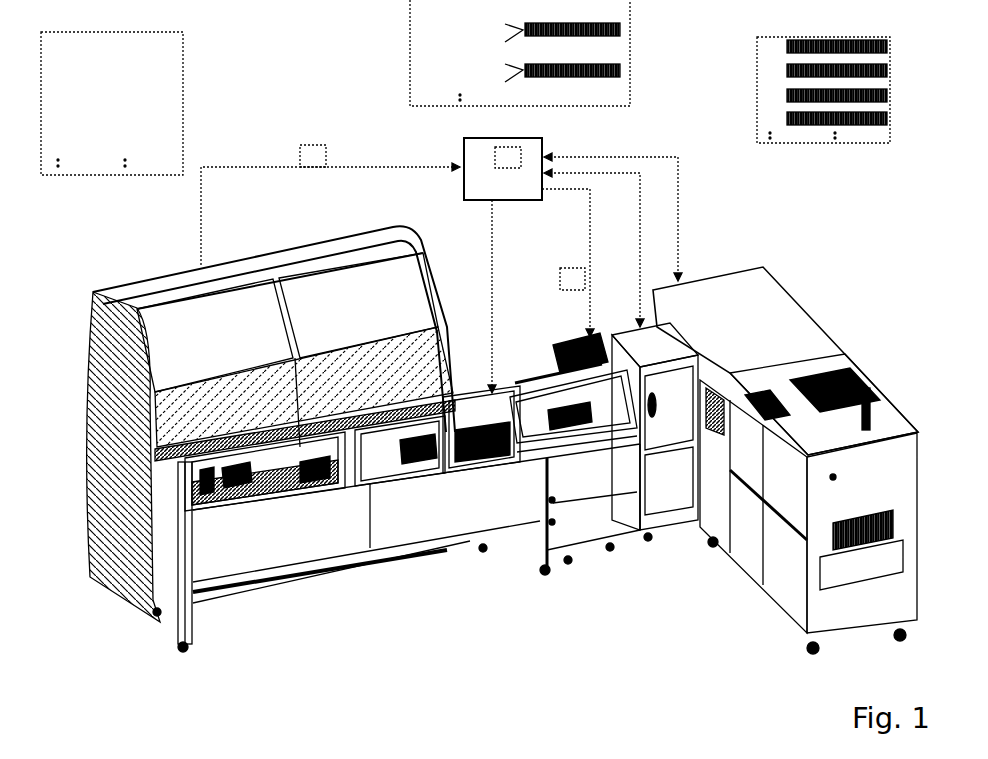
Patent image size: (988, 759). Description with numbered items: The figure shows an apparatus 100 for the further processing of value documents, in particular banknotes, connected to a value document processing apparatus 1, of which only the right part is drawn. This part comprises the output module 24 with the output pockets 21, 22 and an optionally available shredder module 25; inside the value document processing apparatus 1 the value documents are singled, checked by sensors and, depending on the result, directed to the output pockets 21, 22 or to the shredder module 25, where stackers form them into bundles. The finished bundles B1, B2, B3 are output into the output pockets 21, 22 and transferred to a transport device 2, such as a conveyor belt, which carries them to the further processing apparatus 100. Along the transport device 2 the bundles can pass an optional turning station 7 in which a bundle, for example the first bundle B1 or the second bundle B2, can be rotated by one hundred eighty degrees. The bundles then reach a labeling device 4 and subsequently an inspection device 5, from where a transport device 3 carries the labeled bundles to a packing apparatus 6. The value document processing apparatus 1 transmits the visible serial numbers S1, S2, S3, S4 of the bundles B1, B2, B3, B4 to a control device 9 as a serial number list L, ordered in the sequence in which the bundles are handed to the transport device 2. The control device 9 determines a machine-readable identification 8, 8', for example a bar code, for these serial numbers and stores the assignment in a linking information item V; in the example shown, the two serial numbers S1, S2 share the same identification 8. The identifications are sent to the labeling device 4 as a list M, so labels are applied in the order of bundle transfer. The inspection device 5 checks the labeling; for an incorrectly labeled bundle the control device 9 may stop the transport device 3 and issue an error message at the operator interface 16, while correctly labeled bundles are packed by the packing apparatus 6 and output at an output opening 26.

The value document processing apparatus 1 is at (98, 299).
The transport device 2 is at (400, 451).
The transport device 3 is at (604, 418).
The labeling device 4 is at (580, 344).
The inspection device 5 is at (637, 329).
The packing apparatus 6 is at (772, 268).
The turning station 7 is at (466, 410).
The machine-readable identification 8 is at (717, 41).
The machine-readable identification 8' is at (719, 86).
The control device 9 is at (489, 167).
The operator interface 16 is at (737, 405).
The output pocket 21 is at (212, 517).
The output pocket 22 is at (267, 507).
The output module 24 is at (190, 297).
The shredder module 25 is at (335, 258).
The output opening 26 is at (863, 572).
The apparatus for the further processing of value documents 100 is at (494, 437).
The bundle B1 is at (689, 254).
The bundle B2 is at (580, 257).
The bundle B3 is at (526, 279).
The bundle B4 is at (770, 119).
The visible serial number S1 is at (183, 84).
The visible serial number S2 is at (183, 102).
The visible serial number S3 is at (183, 120).
The visible serial number S4 is at (183, 138).
The serial number list L is at (38, 88).
The list of machine-readable identifications M is at (802, 37).
The linking information item V is at (508, 157).